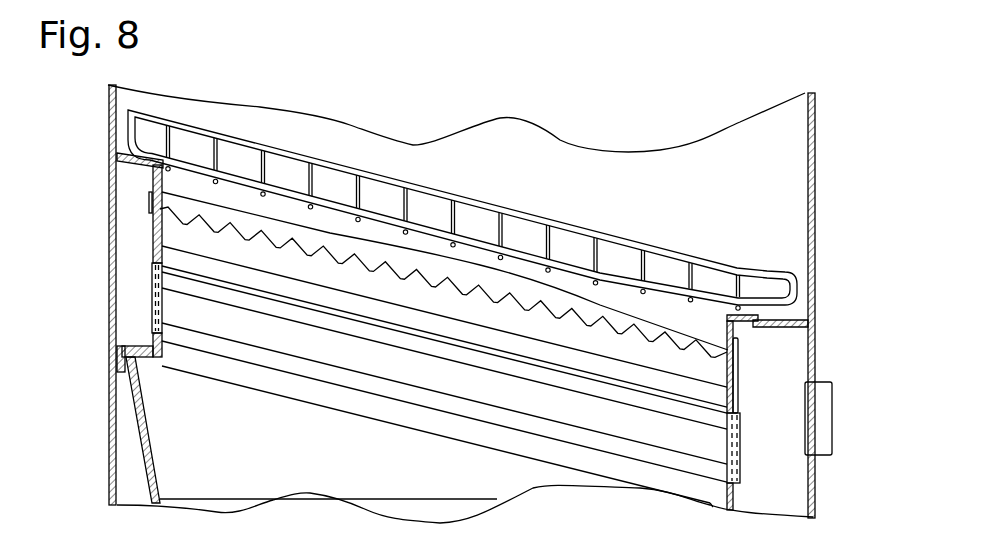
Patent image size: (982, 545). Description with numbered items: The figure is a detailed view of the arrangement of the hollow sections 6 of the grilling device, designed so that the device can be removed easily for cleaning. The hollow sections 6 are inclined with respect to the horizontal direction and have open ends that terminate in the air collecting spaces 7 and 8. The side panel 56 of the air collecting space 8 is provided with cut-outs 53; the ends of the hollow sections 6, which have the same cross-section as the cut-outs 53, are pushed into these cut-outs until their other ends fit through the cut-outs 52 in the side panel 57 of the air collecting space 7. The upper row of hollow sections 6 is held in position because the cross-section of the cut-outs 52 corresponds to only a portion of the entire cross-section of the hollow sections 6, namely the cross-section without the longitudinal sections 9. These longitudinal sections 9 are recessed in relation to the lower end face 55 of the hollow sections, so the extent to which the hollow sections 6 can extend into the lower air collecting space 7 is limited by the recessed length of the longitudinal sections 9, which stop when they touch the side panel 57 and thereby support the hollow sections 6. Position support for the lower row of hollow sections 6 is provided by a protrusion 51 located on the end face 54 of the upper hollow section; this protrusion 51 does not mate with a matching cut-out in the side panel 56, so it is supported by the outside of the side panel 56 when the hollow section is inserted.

The hollow sections 6 is at (320, 347).
The air collecting space 7 is at (783, 333).
The air collecting space 8 is at (137, 163).
The longitudinal sections 9 is at (395, 262).
The protrusion 51 is at (153, 337).
The cut-outs 52 is at (737, 447).
The cut-outs 53 is at (157, 303).
The end face 54 is at (155, 286).
The lower end face 55 is at (738, 358).
The side panel 56 is at (142, 168).
The side panel 57 is at (733, 493).